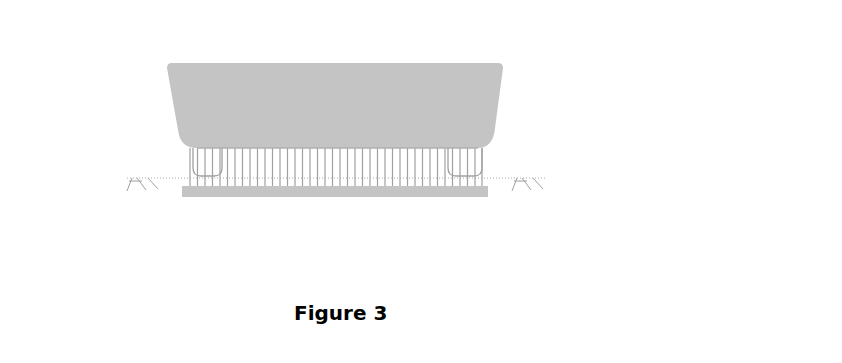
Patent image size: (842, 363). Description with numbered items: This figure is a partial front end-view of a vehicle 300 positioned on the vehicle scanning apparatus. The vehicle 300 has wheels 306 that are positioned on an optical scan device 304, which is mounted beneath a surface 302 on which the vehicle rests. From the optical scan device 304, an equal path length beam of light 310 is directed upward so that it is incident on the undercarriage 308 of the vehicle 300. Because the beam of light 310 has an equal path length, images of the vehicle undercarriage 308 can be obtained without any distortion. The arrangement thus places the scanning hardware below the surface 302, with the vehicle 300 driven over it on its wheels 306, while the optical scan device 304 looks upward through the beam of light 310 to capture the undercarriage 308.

The vehicle 300 is at (457, 75).
The surface 302 is at (135, 184).
The optical scan device 304 is at (243, 190).
The wheels 306 is at (200, 156).
The undercarriage 308 is at (438, 146).
The equal path length beam of light 310 is at (387, 168).